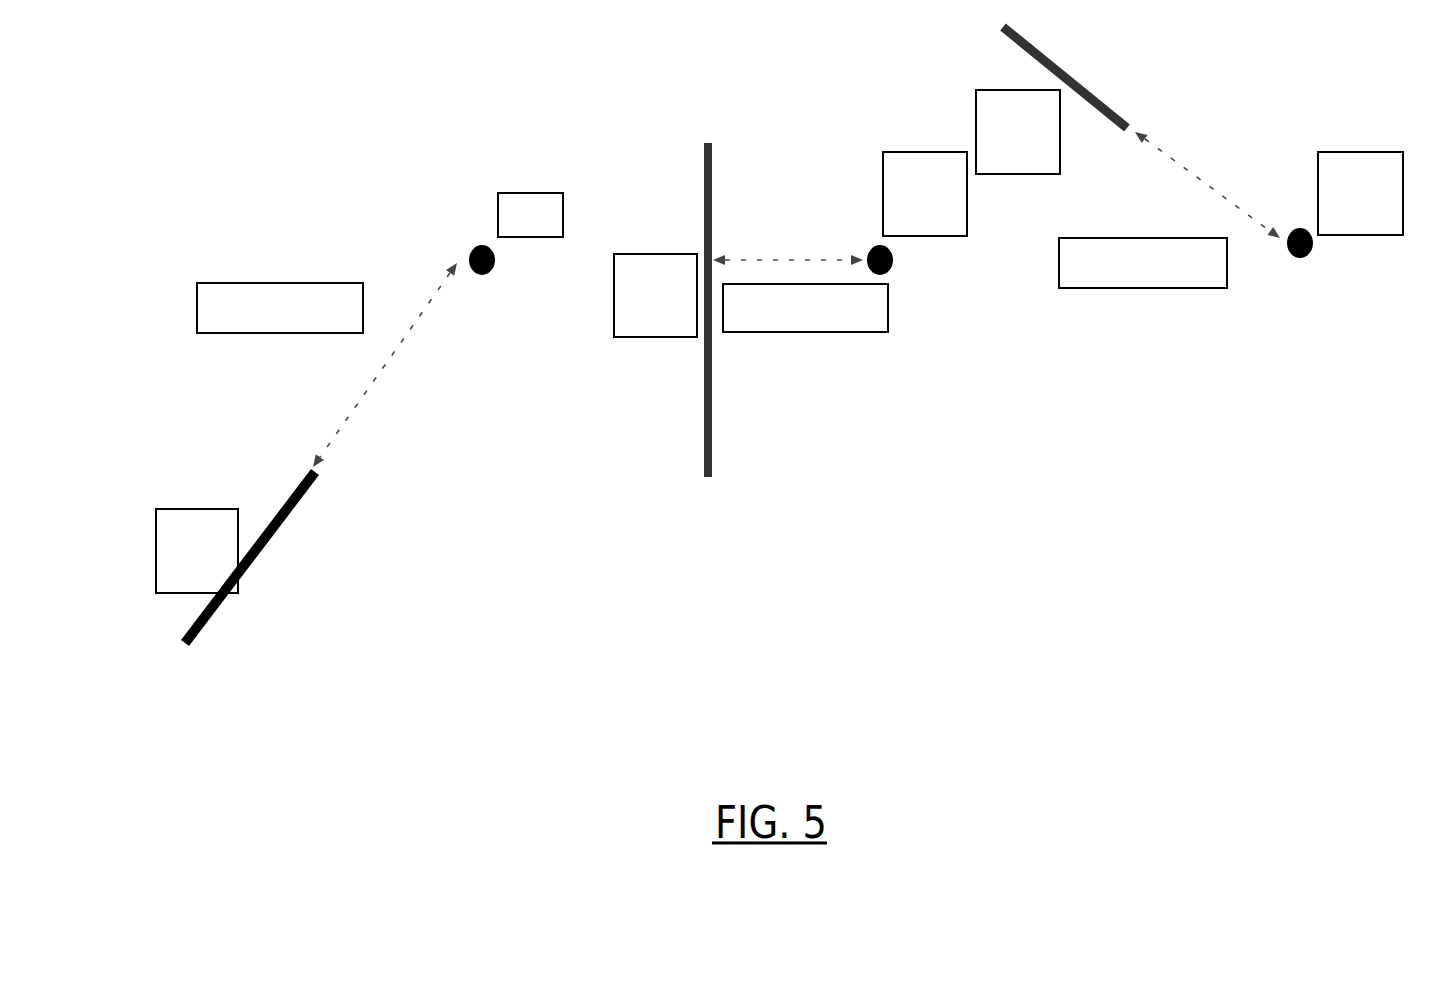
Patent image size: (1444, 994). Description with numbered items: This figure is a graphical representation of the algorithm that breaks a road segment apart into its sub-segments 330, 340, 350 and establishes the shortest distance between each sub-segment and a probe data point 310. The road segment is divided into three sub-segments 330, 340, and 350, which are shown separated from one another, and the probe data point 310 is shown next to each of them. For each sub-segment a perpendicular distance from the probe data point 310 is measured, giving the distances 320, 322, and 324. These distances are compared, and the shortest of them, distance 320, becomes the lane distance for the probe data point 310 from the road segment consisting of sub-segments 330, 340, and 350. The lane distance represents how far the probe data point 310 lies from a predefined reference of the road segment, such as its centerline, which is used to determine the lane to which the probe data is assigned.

The probe data point 310 is at (874, 264).
The lane distance 320 is at (831, 300).
The distance 322 is at (1236, 160).
The distance 324 is at (424, 369).
The sub-segment 330 is at (1002, 77).
The sub-segment 340 is at (632, 310).
The sub-segment 350 is at (213, 552).